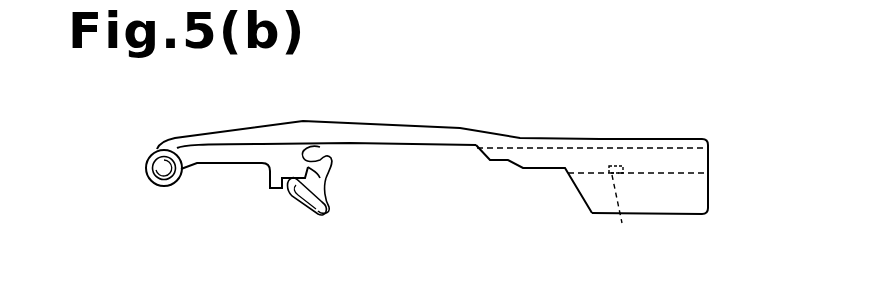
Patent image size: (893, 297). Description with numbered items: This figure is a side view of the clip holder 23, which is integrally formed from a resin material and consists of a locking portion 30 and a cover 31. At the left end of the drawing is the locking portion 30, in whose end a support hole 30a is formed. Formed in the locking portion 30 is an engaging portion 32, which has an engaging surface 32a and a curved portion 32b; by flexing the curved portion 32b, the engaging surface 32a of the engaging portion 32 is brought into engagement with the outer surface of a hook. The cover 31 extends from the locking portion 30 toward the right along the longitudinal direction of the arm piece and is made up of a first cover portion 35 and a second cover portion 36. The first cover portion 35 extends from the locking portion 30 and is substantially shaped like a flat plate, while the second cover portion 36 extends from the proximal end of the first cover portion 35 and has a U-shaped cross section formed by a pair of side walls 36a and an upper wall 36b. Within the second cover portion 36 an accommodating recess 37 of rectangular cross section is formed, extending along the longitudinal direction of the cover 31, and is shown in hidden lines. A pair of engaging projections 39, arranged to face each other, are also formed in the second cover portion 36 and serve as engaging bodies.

The first cover portion 35 is at (371, 128).
The second cover portion 36 is at (576, 135).
The side wall 36a is at (672, 203).
The upper wall 36b is at (642, 138).
The clip holder 23 is at (685, 138).
The accommodating recess 37 is at (693, 148).
The engaging projection 39 is at (621, 210).
The cover 31 is at (542, 160).
The locking portion 30 is at (233, 157).
The support hole 30a is at (158, 172).
The engaging portion 32 is at (305, 175).
The engaging surface 32a is at (326, 165).
The curved portion 32b is at (328, 208).